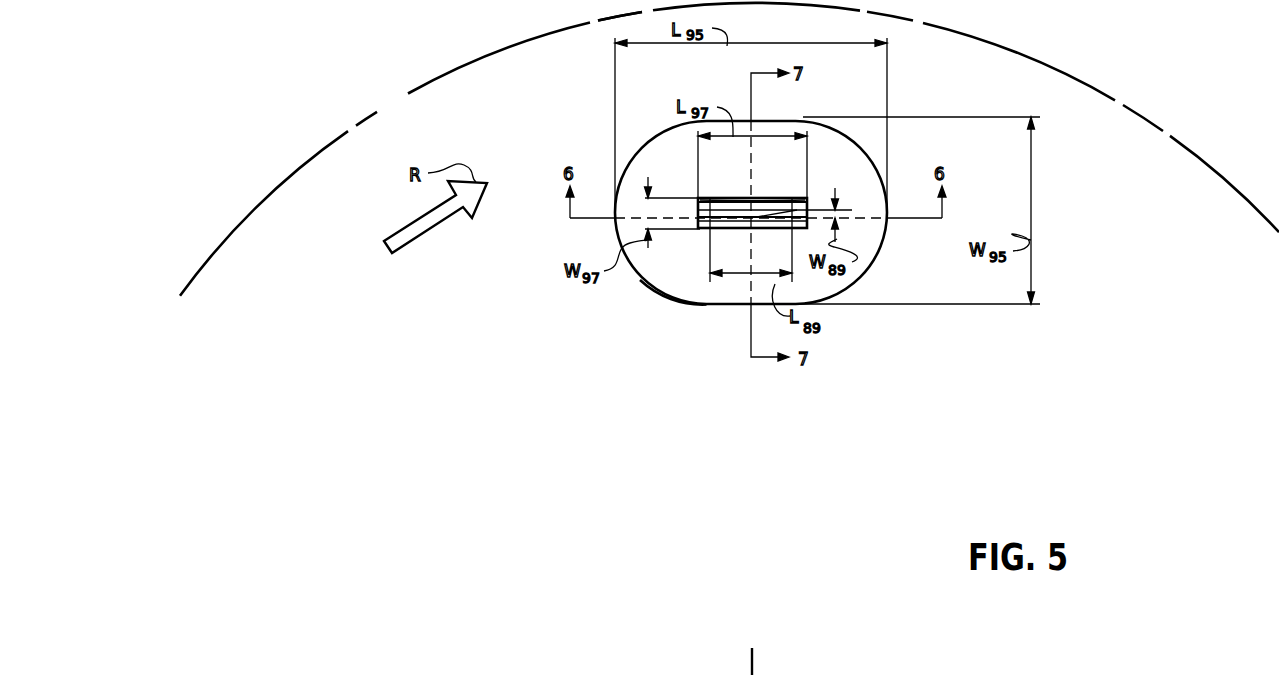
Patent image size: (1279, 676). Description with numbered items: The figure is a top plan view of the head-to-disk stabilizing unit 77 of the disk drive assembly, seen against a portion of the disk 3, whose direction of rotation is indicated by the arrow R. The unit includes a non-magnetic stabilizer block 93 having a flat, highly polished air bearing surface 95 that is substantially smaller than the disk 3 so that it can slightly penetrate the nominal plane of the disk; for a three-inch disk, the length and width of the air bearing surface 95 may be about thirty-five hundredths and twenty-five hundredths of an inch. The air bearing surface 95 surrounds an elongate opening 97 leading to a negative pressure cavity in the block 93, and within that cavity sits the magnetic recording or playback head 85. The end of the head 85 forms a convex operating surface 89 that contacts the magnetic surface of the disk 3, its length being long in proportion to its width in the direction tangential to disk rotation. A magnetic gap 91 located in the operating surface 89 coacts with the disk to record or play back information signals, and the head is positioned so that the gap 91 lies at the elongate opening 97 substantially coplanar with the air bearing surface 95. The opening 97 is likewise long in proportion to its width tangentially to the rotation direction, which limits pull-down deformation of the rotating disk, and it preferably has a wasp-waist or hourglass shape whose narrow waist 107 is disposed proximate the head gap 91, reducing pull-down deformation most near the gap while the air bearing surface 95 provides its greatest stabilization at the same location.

The disk 3 is at (409, 93).
The head-to-disk stabilizing unit 77 is at (639, 293).
The magnetic recording or playback head 85 is at (698, 212).
The operating surface 89 is at (789, 208).
The magnetic gap 91 is at (775, 204).
The non-magnetic stabilizer block 93 is at (674, 303).
The air bearing surface 95 is at (724, 304).
The elongate opening 97 is at (706, 231).
The narrow waist 107 is at (742, 197).